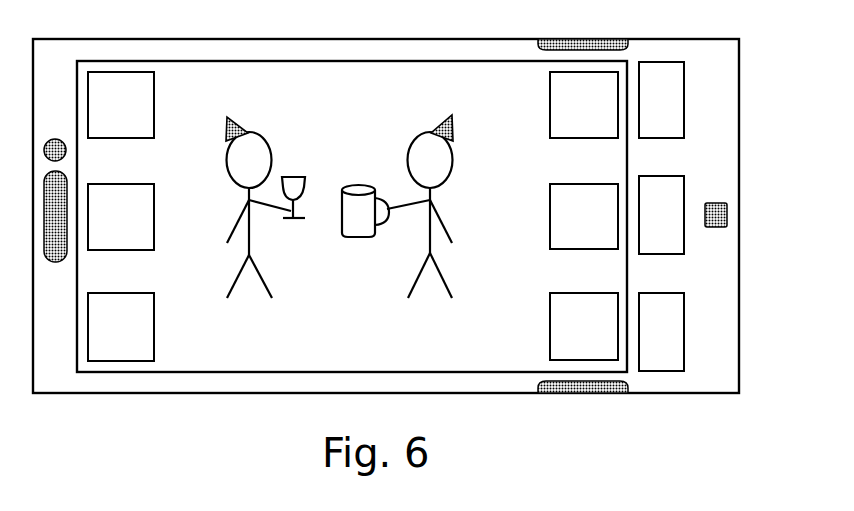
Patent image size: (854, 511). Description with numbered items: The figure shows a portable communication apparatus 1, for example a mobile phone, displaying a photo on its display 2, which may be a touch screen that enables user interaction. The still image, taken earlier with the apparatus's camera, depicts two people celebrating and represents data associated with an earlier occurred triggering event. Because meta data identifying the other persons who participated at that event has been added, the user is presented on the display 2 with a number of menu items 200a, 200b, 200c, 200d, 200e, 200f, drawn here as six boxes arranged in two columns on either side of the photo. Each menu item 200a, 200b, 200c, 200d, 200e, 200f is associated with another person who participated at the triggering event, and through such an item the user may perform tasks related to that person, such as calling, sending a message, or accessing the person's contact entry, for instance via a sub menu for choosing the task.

The portable communication apparatus 1 is at (740, 104).
The display 2 is at (287, 348).
The menu item 200a is at (147, 116).
The menu item 200b is at (147, 228).
The menu item 200c is at (147, 338).
The menu item 200d is at (610, 116).
The menu item 200e is at (610, 228).
The menu item 200f is at (608, 338).